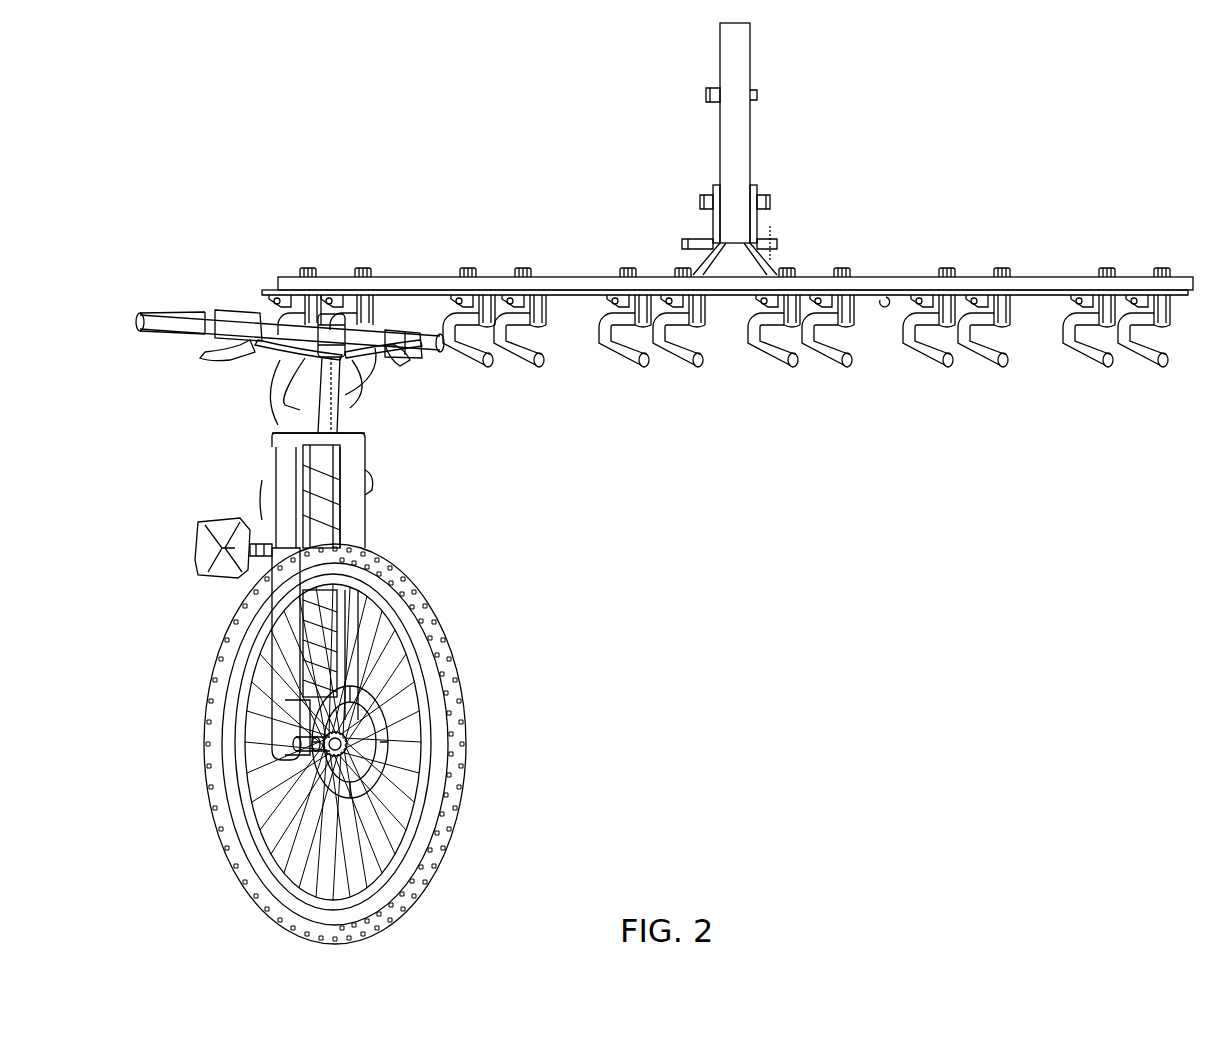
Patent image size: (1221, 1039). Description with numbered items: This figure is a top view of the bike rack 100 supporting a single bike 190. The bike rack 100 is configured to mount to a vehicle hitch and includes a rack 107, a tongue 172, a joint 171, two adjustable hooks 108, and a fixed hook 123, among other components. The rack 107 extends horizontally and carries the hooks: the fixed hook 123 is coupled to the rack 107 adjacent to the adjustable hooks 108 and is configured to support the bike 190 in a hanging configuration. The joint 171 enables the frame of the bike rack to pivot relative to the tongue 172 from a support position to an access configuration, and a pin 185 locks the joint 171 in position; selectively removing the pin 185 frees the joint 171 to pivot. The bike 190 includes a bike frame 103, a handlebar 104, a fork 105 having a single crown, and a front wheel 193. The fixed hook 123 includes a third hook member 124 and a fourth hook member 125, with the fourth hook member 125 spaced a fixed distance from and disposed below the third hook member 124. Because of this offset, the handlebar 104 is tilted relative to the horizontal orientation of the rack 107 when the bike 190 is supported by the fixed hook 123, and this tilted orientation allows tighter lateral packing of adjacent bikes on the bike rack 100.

The bike rack 100 is at (411, 158).
The rack 107 is at (578, 288).
The adjustable hooks 108 is at (484, 300).
The fixed hook 123 is at (303, 292).
The tongue 172 is at (740, 54).
The joint 171 is at (757, 222).
The pin 185 is at (766, 244).
The bike 190 is at (150, 476).
The front wheel 193 is at (455, 702).
The bike frame 103 is at (318, 505).
The fork 105 is at (282, 478).
The handlebar 104 is at (383, 340).
The third hook member 124 is at (300, 364).
The fourth hook member 125 is at (350, 370).